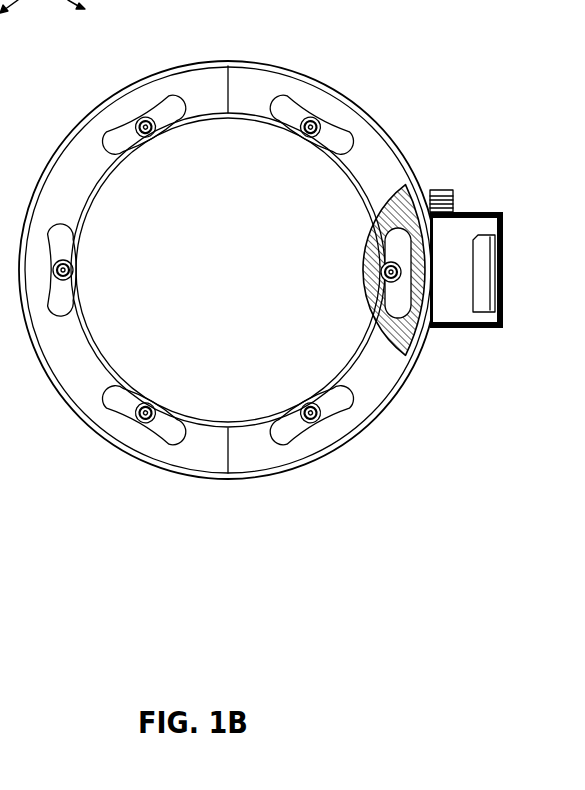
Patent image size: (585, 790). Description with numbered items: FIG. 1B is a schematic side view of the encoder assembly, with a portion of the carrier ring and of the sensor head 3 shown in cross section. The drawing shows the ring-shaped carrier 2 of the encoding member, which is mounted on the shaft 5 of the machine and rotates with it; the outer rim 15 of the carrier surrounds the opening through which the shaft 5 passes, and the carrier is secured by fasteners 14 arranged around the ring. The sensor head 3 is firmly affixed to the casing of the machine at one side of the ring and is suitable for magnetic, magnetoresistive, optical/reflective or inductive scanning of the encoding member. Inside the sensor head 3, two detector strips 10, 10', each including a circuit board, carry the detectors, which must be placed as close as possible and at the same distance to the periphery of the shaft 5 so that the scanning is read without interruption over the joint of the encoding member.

The outer rim 15 is at (223, 62).
The ring frame 2 is at (340, 115).
The pivot 14 is at (149, 136).
The shaft 5 is at (247, 283).
The detector strip 10 is at (437, 257).
The detector strip 10' is at (457, 324).
The sensor head 3 is at (505, 272).